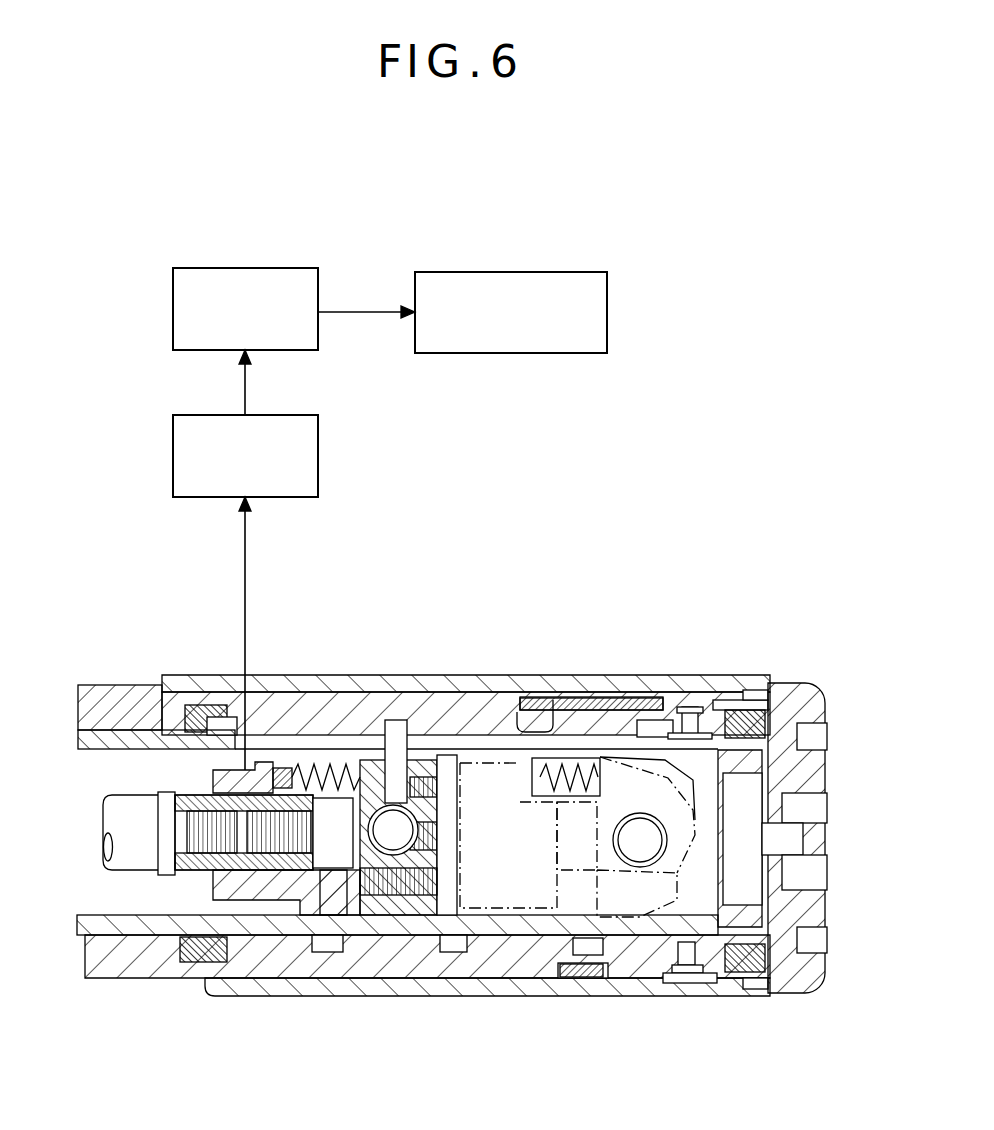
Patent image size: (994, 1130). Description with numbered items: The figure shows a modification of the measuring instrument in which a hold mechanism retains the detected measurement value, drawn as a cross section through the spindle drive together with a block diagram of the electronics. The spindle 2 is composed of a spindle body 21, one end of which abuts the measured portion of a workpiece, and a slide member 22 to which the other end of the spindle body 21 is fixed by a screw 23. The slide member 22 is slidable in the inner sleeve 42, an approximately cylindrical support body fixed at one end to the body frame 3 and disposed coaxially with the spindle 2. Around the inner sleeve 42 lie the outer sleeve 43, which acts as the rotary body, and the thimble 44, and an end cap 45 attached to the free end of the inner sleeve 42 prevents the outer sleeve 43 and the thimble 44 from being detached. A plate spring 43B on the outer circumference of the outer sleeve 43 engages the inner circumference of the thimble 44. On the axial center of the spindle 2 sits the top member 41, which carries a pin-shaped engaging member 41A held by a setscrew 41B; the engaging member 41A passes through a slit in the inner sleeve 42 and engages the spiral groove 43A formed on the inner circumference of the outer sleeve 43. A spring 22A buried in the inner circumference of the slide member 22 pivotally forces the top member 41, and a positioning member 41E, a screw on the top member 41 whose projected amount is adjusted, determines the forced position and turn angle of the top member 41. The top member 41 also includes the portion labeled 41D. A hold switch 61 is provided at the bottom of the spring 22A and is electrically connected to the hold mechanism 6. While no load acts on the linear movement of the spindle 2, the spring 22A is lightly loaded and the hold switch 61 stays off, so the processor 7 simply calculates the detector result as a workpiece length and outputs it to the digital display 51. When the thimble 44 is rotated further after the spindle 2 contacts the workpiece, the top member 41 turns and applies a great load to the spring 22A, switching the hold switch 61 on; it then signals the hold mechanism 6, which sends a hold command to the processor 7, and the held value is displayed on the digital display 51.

The spindle 2 is at (228, 958).
The body frame 3 is at (93, 698).
The hold mechanism 6 is at (172, 461).
The processor 7 is at (172, 313).
The spindle body 21 is at (137, 853).
The slide member 22 is at (290, 905).
The spring 22A is at (300, 767).
The screw 23 is at (330, 870).
The top member 41 is at (394, 843).
The engaging member 41A is at (392, 735).
The setscrew 41B is at (441, 787).
The lever member 41D is at (565, 766).
The positioning member 41E is at (413, 895).
The inner sleeve 42 is at (76, 752).
The outer sleeve 43 is at (617, 844).
The spiral groove 43A is at (553, 697).
The plate spring 43B is at (626, 717).
The thimble 44 is at (750, 683).
The end cap 45 is at (793, 683).
The digital display 51 is at (607, 315).
The hold switch 61 is at (273, 763).